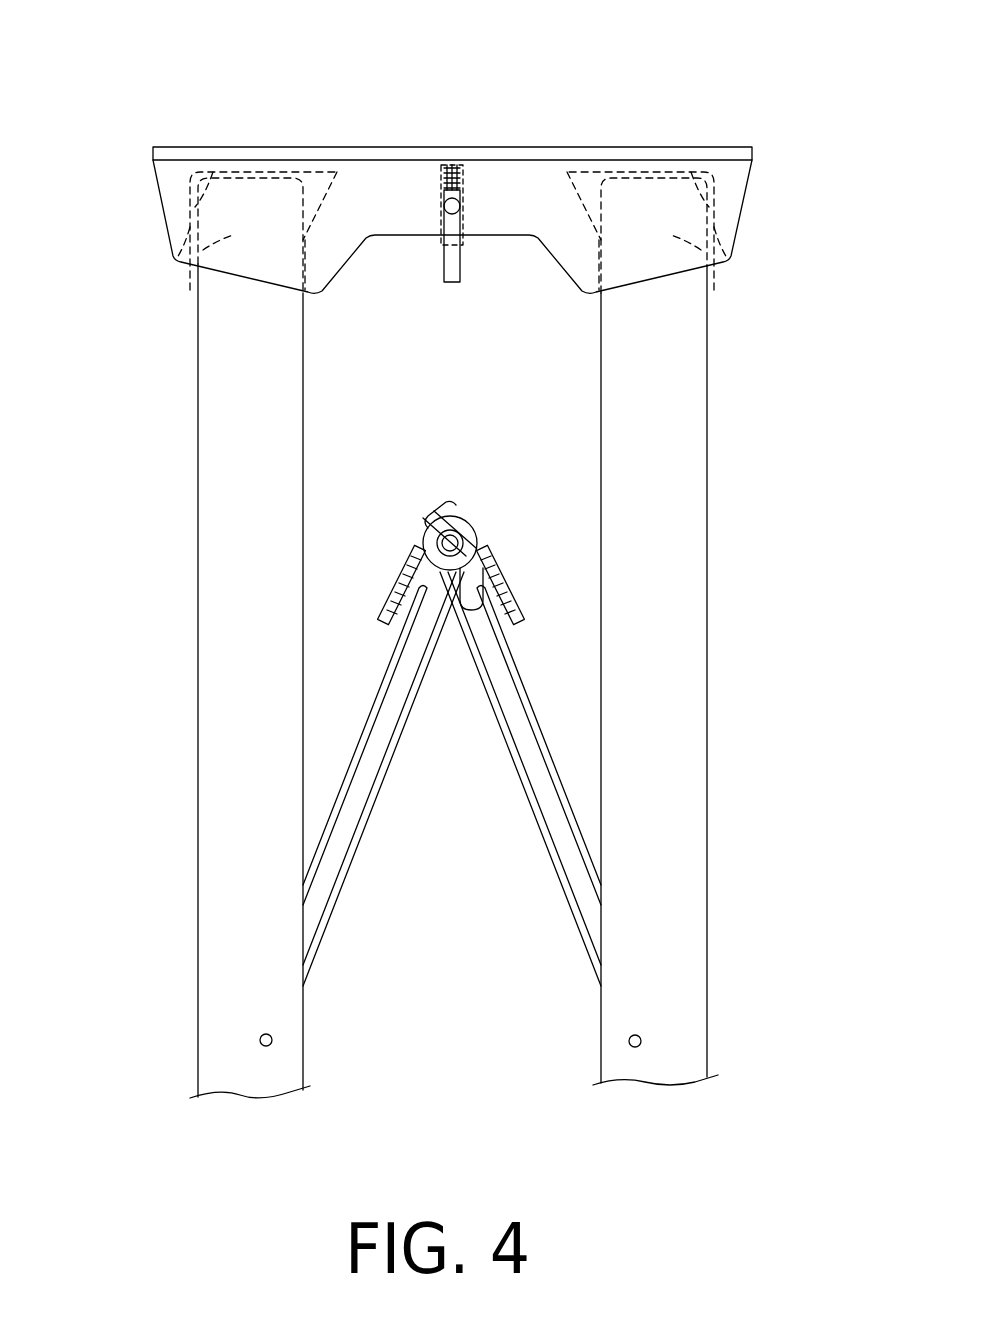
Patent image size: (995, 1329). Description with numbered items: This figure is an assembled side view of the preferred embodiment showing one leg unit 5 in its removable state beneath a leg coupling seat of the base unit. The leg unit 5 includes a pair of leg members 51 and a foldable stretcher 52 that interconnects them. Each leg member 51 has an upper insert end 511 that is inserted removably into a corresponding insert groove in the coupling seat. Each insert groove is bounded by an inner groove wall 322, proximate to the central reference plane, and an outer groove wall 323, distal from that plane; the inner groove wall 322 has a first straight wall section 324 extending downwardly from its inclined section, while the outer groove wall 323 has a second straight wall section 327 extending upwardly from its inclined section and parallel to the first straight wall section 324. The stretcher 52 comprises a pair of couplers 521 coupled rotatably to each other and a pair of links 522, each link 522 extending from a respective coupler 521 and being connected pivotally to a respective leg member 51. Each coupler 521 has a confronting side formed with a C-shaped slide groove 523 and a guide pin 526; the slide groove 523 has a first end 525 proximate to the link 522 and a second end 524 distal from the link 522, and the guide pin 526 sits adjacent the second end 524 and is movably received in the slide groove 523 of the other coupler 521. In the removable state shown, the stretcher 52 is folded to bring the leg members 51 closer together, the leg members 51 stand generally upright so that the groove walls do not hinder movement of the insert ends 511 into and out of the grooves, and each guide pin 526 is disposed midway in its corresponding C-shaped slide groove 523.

The leg unit 5 is at (461, 638).
The leg member 51 is at (461, 638).
The upper insert end 511 is at (235, 236).
The foldable stretcher 52 is at (460, 688).
The coupler 521 is at (477, 507).
The link 522 is at (535, 805).
The C-shaped slide groove 523 is at (470, 538).
The second end 524 is at (440, 520).
The first end 525 is at (503, 573).
The guide pin 526 is at (415, 535).
The inner groove wall 322 is at (313, 183).
The outer groove wall 323 is at (222, 212).
The first straight wall section 324 is at (298, 270).
The second straight wall section 327 is at (212, 168).